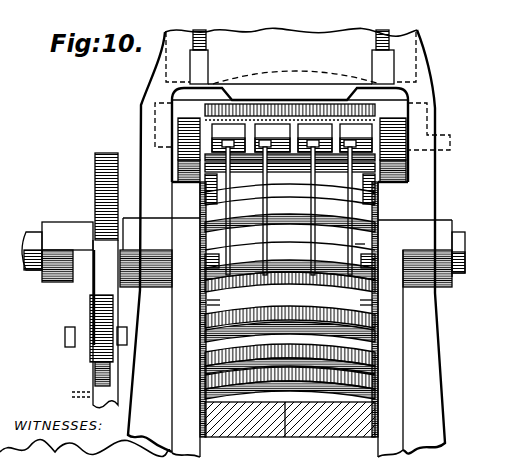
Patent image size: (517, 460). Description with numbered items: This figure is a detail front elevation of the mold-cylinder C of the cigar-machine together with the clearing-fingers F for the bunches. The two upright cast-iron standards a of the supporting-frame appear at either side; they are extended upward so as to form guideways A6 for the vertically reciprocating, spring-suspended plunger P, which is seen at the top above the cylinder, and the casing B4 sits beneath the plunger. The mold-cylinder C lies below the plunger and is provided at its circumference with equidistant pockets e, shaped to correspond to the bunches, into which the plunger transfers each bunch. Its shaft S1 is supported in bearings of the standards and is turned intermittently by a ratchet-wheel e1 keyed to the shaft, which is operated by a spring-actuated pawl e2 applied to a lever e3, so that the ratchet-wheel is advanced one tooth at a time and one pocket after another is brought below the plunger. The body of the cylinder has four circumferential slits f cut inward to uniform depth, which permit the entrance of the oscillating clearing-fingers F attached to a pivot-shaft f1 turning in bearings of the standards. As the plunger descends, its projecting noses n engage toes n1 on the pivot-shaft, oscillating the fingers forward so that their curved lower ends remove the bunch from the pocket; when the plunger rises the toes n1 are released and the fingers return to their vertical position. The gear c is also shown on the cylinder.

The guideways A6 is at (166, 40).
The upright standards a is at (176, 343).
The plunger P is at (294, 63).
The projecting noses n is at (202, 31).
The housing casing B4 is at (168, 98).
The toes n1 is at (195, 137).
The pivot-shaft f1 is at (155, 135).
The clearing-fingers F is at (213, 193).
The pockets e is at (289, 305).
The circumferential slits f is at (360, 248).
The mold-cylinder C is at (290, 294).
The gear c is at (290, 377).
The ratchet-wheel e1 is at (95, 197).
The spring-actuated pawl e2 is at (110, 282).
The lever e3 is at (80, 382).
The shaft of the mold-cylinder S1 is at (452, 250).